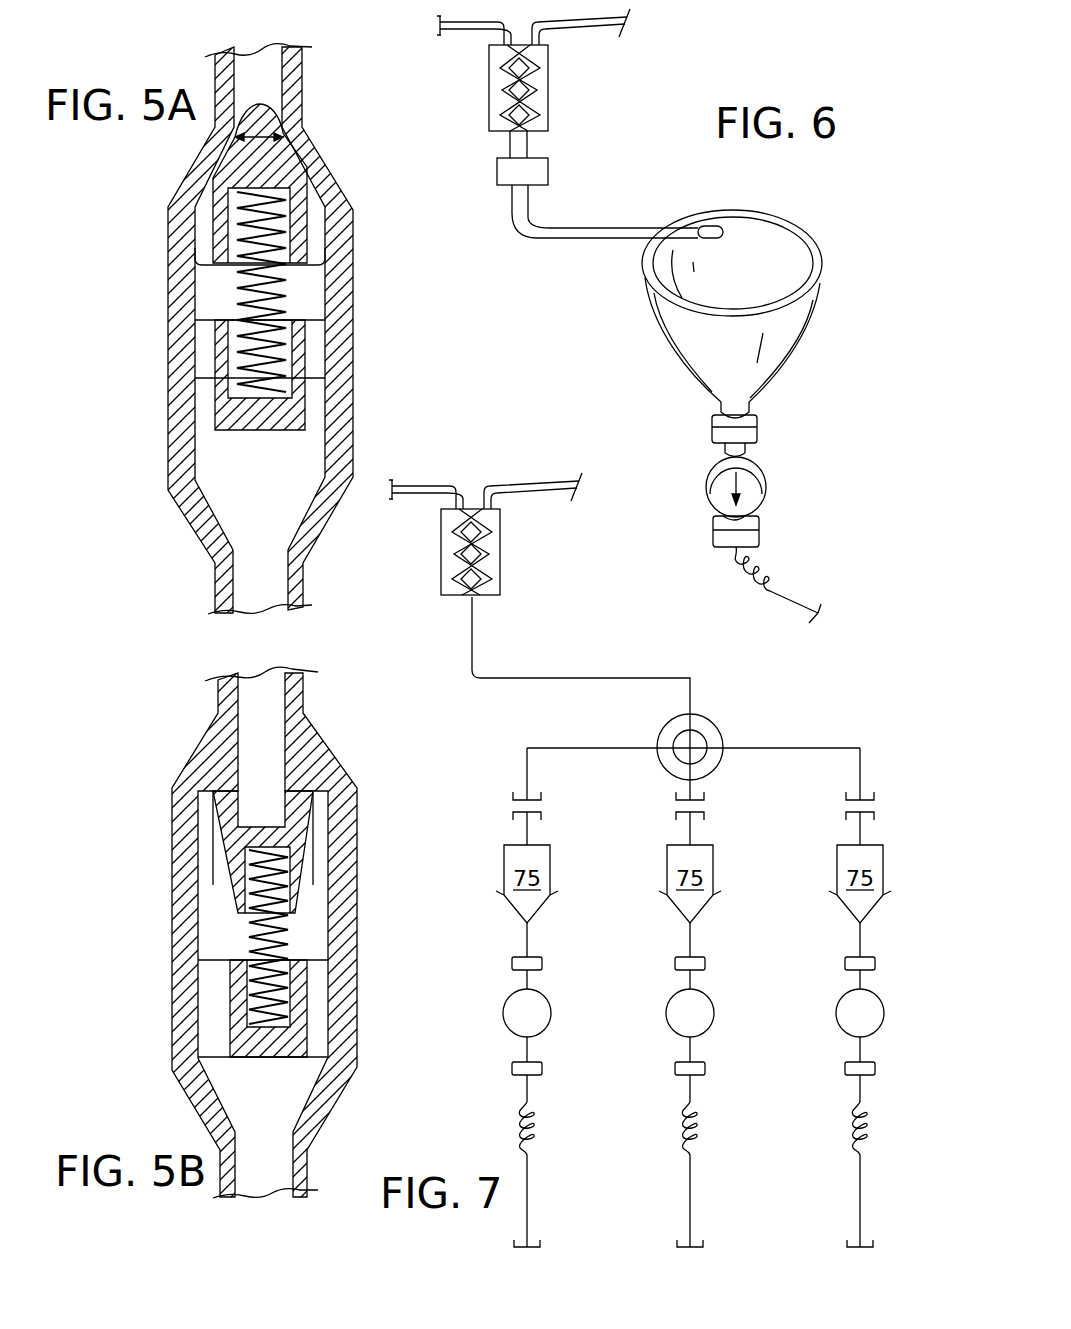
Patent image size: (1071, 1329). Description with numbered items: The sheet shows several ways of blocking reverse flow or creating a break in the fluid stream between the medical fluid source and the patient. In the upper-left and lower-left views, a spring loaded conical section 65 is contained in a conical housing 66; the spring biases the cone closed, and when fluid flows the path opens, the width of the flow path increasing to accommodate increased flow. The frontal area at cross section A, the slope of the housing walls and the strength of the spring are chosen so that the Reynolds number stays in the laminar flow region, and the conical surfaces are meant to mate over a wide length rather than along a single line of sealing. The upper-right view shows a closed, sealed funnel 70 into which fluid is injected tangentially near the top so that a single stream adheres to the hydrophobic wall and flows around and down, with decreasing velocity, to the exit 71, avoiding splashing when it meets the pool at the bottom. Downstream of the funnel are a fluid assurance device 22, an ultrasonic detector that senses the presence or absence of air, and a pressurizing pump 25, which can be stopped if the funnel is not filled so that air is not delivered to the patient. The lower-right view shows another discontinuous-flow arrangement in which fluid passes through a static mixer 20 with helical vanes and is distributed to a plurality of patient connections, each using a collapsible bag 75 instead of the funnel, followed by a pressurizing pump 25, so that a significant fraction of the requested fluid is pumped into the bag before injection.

In FIG. 5A, the cross section A is at (284, 120).
In FIG. 5A, the spring loaded conical section 65 is at (287, 171).
In FIG. 5A, the conical housing 66 is at (362, 302).
In FIG. 6, the funnel 70 is at (813, 313).
In FIG. 6, the exit 71 is at (760, 405).
In FIG. 6, the fluid assurance device 22 is at (760, 440).
In FIG. 6, the pressurizing pump 25 is at (752, 497).
In FIG. 7, the pressurizing pump 25 is at (668, 1013).
In FIG. 7, the static mixer 20 is at (501, 540).
In FIG. 7, the collapsible bag 75 is at (693, 884).